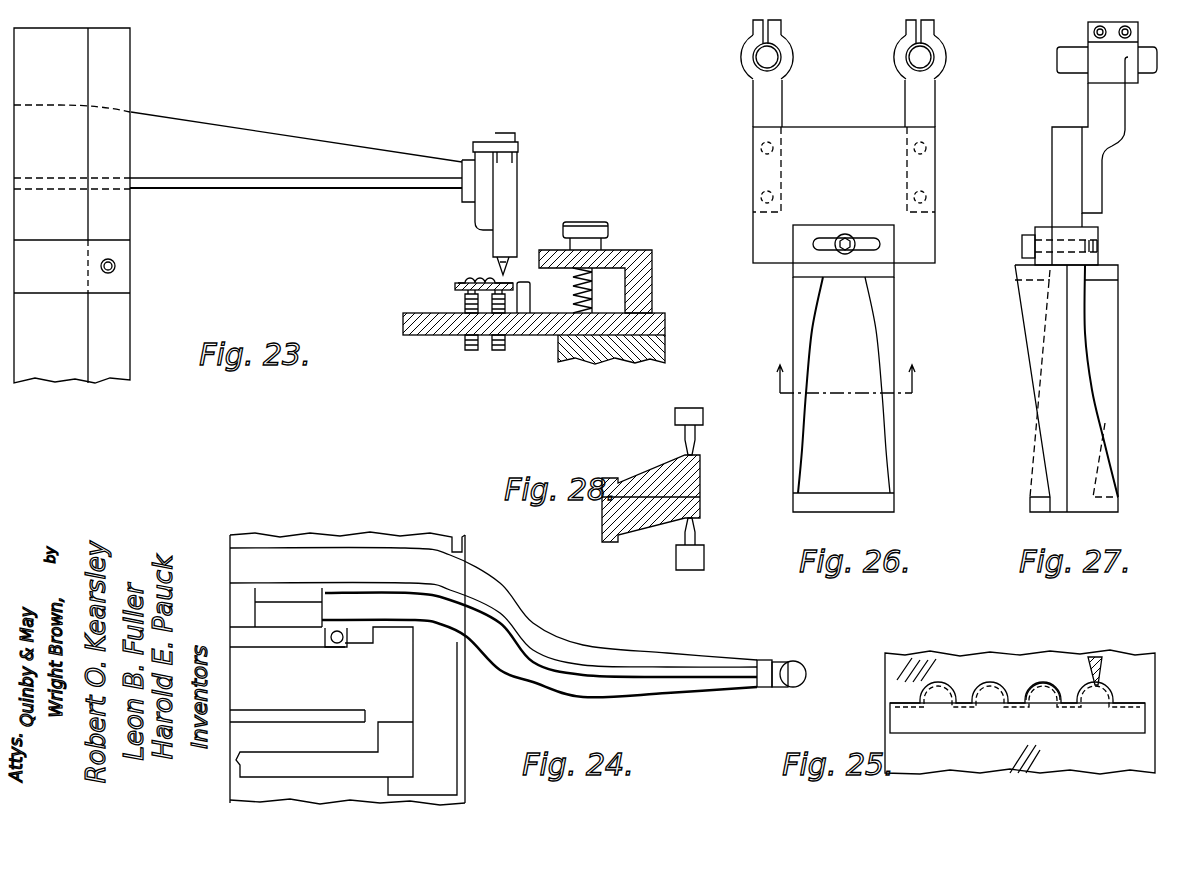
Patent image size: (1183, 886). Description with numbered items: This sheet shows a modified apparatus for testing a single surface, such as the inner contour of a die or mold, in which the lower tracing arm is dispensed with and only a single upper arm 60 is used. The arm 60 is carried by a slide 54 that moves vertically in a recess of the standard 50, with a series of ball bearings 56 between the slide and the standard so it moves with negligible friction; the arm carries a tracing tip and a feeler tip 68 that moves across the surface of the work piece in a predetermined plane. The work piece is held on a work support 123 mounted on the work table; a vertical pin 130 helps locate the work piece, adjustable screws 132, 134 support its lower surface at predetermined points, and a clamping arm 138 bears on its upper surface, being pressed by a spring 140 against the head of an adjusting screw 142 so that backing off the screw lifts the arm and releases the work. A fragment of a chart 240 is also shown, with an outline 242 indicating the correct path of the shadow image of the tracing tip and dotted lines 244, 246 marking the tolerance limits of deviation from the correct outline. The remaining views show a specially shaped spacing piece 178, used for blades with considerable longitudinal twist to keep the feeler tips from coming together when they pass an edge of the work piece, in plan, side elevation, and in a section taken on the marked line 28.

In FIG. 23, the arm 60 is at (290, 143).
In FIG. 24, the arm 60 is at (478, 611).
In FIG. 23, the feeler tip 68 is at (498, 278).
In FIG. 23, the vertical pin 130 is at (526, 305).
In FIG. 23, the clamping screw 132 is at (500, 352).
In FIG. 23, the clamping screw 134 is at (472, 351).
In FIG. 23, the work support 123 is at (660, 351).
In FIG. 23, the clamping arm 138 is at (612, 250).
In FIG. 23, the spring 140 is at (573, 294).
In FIG. 23, the adjusting screw 142 is at (588, 227).
In FIG. 24, the slide 54 is at (280, 632).
In FIG. 24, the ball bearings 56 is at (338, 630).
In FIG. 24, the standard 50 is at (397, 680).
In FIG. 25, the chart 240 is at (898, 662).
In FIG. 25, the outline 242 is at (945, 685).
In FIG. 25, the dotted line 244 is at (1043, 686).
In FIG. 25, the dotted line 246 is at (1052, 692).
In FIG. 26, the spacing piece 178 is at (798, 317).
In FIG. 27, the spacing piece 178 is at (1052, 431).
In FIG. 28, the spacing piece 178 is at (650, 471).
In FIG. 26, the section line 28- 28 is at (846, 385).